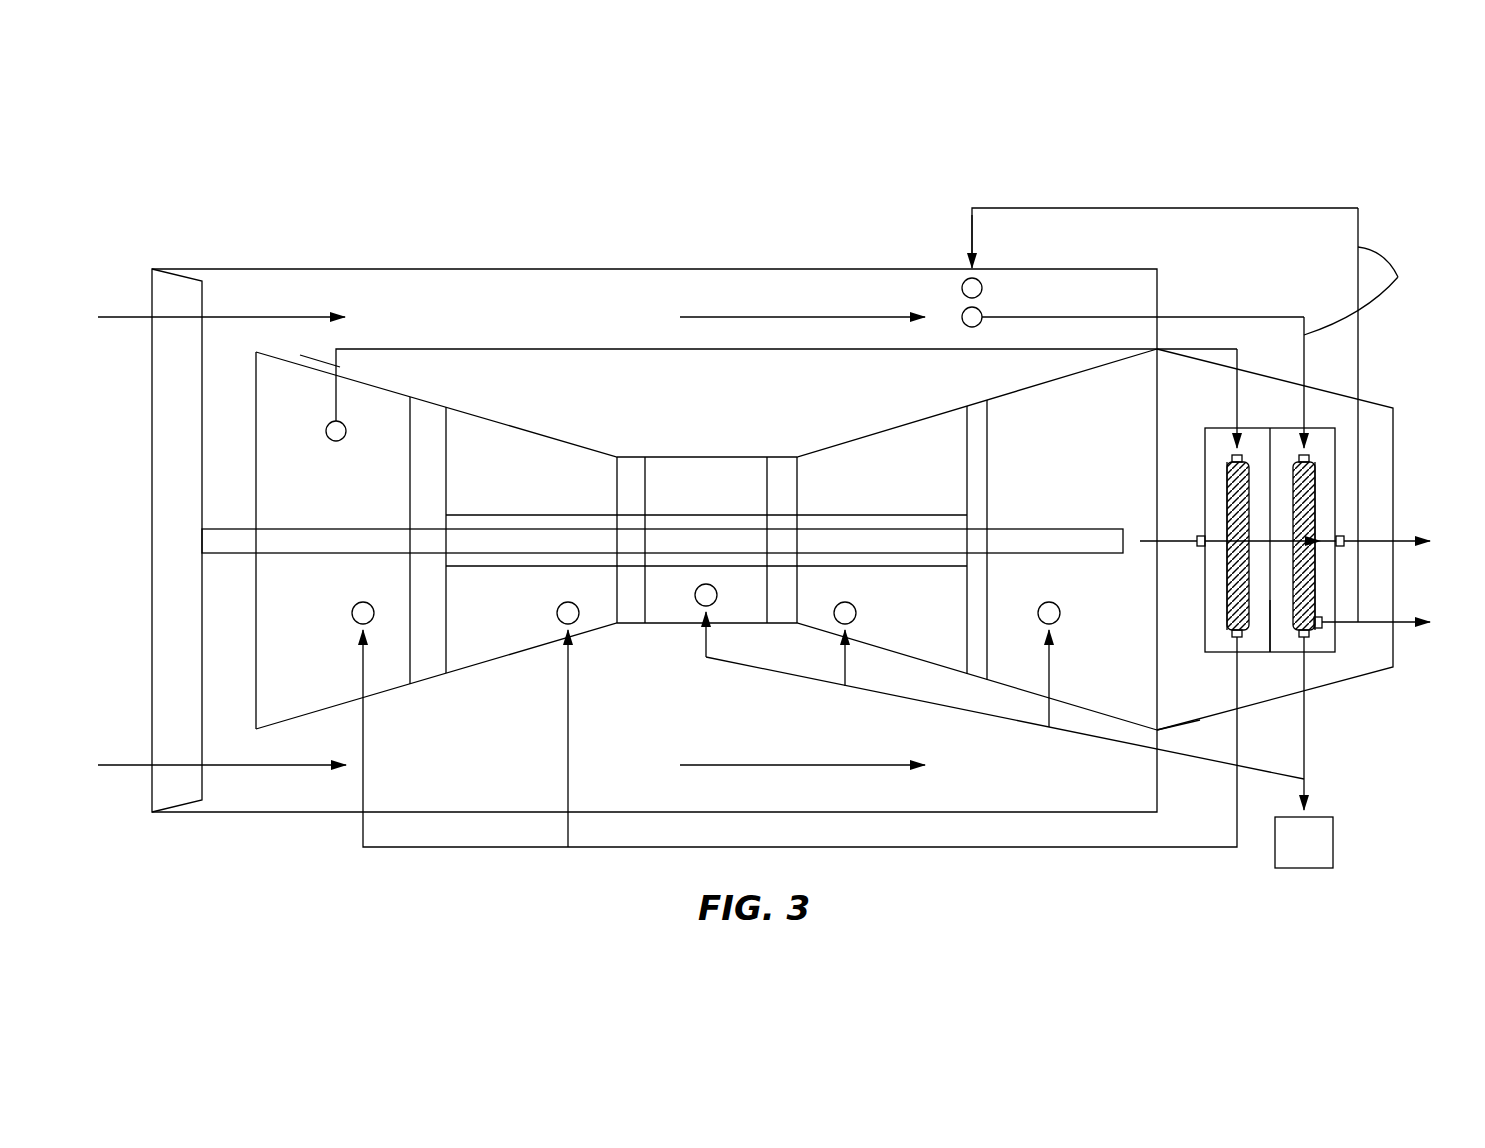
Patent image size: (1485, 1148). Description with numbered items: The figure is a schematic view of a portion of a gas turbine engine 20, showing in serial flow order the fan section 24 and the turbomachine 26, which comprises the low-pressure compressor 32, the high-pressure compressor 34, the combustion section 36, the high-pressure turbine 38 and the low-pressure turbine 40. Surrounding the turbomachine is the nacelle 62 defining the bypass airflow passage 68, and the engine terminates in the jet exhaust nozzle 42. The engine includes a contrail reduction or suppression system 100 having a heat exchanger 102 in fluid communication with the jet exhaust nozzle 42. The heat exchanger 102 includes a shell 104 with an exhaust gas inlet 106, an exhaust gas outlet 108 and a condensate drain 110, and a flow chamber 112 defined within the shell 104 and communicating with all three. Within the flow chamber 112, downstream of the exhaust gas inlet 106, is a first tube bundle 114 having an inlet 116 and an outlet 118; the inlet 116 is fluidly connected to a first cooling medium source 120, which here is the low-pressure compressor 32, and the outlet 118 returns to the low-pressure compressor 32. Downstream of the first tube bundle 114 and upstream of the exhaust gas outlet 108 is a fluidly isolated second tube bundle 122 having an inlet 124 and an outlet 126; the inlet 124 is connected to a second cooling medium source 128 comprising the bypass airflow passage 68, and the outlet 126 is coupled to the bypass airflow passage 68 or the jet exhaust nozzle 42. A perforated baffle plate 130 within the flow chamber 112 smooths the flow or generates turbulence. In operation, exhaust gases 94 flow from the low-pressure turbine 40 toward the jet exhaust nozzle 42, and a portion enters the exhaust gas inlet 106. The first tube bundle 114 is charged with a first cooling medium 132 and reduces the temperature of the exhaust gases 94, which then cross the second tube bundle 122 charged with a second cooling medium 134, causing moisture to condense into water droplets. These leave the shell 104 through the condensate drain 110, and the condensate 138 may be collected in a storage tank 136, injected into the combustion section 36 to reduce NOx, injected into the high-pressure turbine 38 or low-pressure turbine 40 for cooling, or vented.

The gas turbine engine 20 is at (236, 128).
The fan section 24 is at (192, 485).
The turbomachine 26 is at (692, 442).
The low-pressure compressor 32 is at (347, 497).
The high-pressure compressor 34 is at (537, 502).
The combustion section 36 is at (720, 502).
The high-pressure turbine 38 is at (892, 502).
The low-pressure turbine 40 is at (1075, 482).
The jet exhaust nozzle 42 is at (1390, 402).
The nacelle 62 is at (448, 268).
The bypass airflow passage 68 is at (580, 327).
The exhaust gases 94 is at (1140, 543).
The contrail reduction or suppression system 100 is at (1219, 165).
The heat exchanger 102 is at (1213, 678).
The shell 104 is at (1338, 493).
The exhaust gas inlet 106 is at (1198, 548).
The exhaust gas outlet 108 is at (1341, 548).
The condensate drain 110 is at (1310, 640).
The flow chamber 112 is at (1213, 503).
The first tube bundle 114 is at (1227, 466).
The inlet of the first tube bundle 116 is at (1243, 458).
The outlet of the first tube bundle 118 is at (1230, 633).
The first cooling medium source 120 is at (361, 372).
The second tube bundle 122 is at (1315, 510).
The inlet of the second tube bundle 124 is at (1312, 460).
The outlet of the second tube bundle 126 is at (1322, 624).
The second cooling medium source 128 is at (950, 307).
The baffle plate 130 is at (1267, 655).
The first cooling medium 132 is at (336, 393).
The second cooling medium 134 is at (970, 250).
The storage tank 136 is at (1325, 857).
The condensate 138 is at (1077, 733).